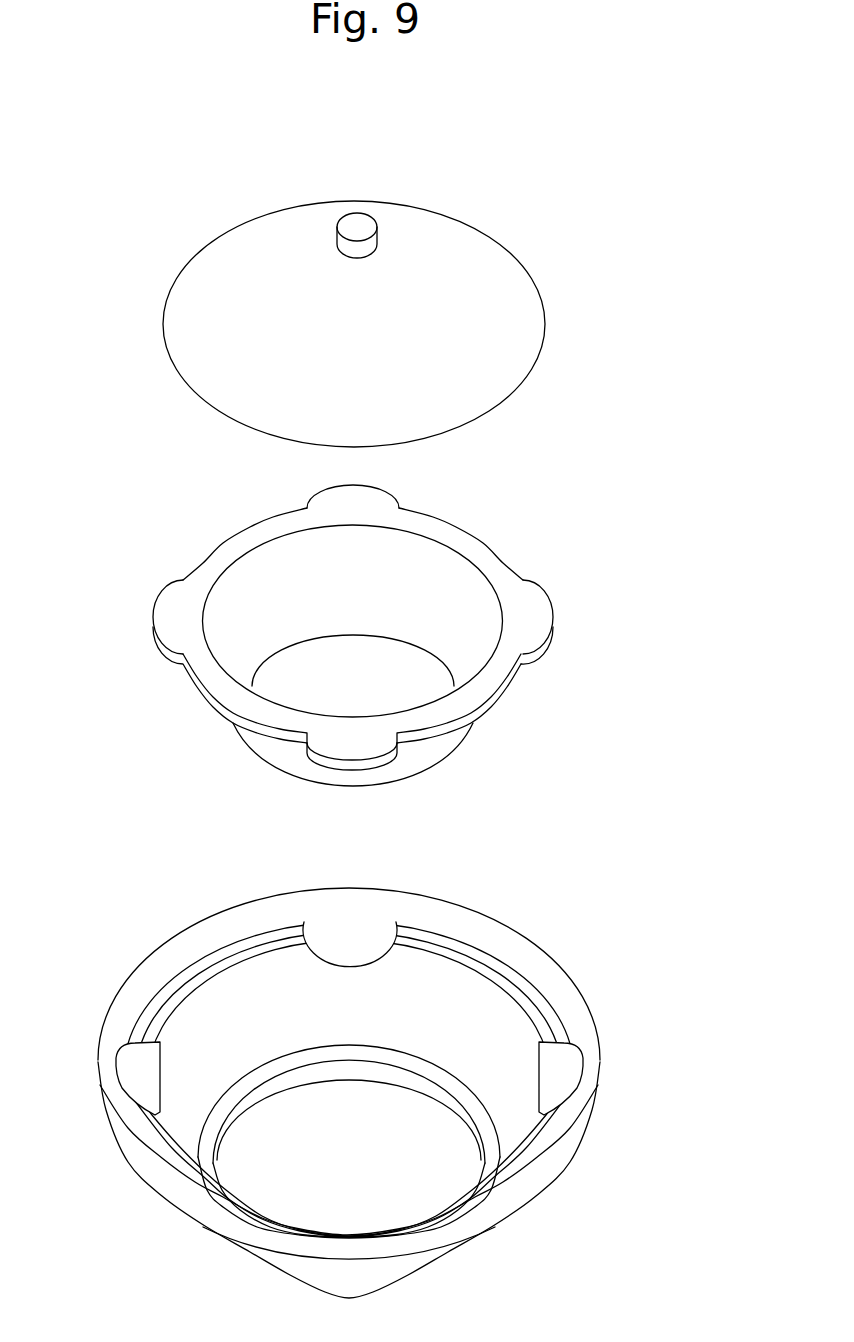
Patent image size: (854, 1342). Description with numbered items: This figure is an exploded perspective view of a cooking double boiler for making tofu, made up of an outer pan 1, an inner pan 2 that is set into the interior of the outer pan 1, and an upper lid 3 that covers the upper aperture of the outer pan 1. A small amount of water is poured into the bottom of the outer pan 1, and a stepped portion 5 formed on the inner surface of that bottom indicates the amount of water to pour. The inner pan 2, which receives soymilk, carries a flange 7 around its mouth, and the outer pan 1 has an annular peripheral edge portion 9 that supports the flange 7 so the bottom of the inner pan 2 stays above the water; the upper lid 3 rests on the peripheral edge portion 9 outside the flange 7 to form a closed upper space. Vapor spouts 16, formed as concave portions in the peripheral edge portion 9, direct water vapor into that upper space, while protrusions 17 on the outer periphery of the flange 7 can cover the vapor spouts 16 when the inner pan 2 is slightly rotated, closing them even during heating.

The outer pan 1 is at (450, 1252).
The inner pan 2 is at (443, 738).
The upper lid 3 is at (517, 327).
The stepped portion 5 is at (435, 1072).
The flange 7 is at (480, 555).
The annular peripheral edge portion 9 is at (550, 1010).
The vapor spouts 16 is at (563, 1072).
The protrusions 17 is at (537, 622).